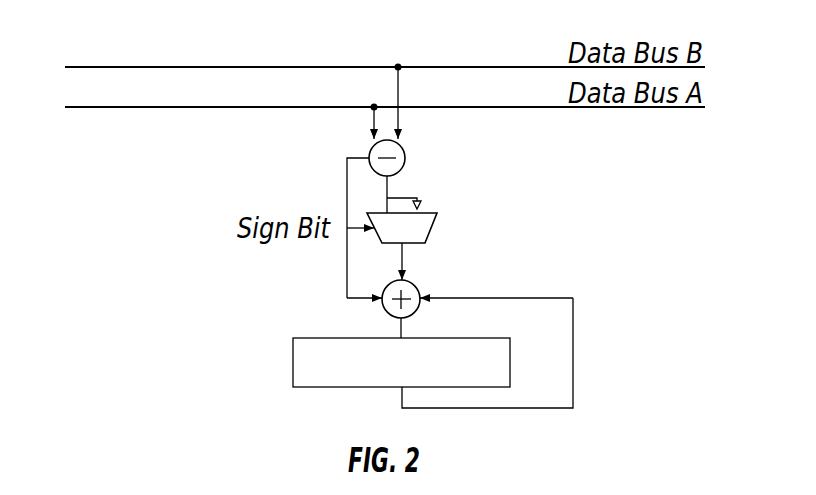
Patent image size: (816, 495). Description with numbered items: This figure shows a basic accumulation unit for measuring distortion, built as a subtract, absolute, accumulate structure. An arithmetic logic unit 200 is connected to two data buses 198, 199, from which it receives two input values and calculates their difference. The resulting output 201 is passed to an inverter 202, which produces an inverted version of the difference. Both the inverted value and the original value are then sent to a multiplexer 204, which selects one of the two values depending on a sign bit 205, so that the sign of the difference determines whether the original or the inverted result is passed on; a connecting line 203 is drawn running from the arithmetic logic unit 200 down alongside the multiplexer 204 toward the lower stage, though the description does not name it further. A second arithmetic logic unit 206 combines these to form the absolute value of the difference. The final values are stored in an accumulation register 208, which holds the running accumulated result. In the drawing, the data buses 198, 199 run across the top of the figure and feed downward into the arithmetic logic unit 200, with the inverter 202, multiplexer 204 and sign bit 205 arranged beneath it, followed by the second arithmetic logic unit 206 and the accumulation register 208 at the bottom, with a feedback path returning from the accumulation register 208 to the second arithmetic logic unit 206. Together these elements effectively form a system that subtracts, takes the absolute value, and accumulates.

The data bus 198 is at (130, 66).
The data bus 199 is at (130, 109).
The arithmetic logic unit 200 is at (406, 152).
The output 201 is at (405, 197).
The inverter 202 is at (422, 206).
The sign bit line 203 is at (347, 192).
The multiplexer 204 is at (426, 243).
The sign bit 205 is at (347, 272).
The second arithmetic logic unit 206 is at (383, 308).
The accumulation register 208 is at (357, 388).